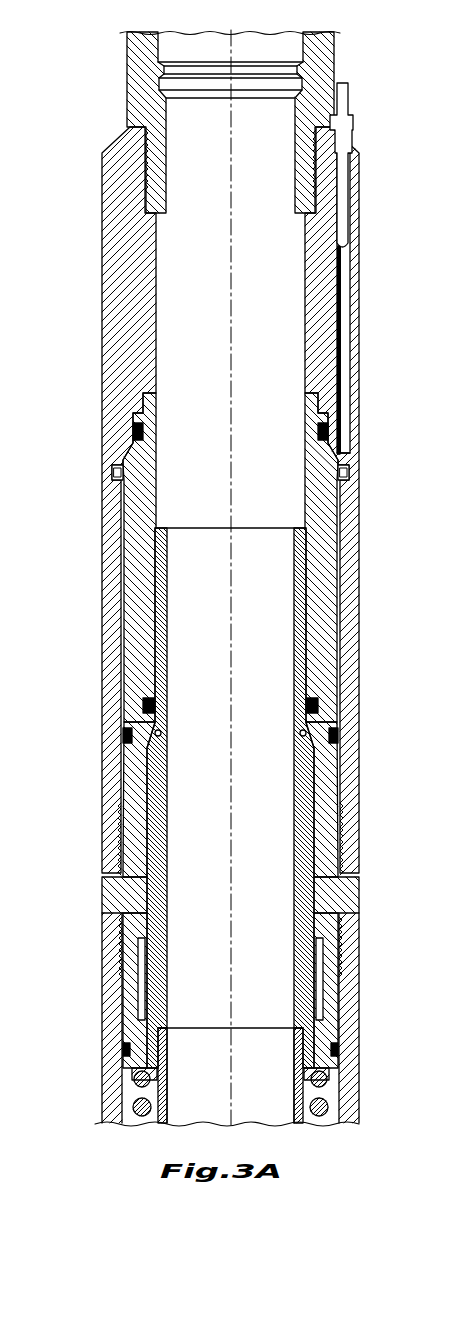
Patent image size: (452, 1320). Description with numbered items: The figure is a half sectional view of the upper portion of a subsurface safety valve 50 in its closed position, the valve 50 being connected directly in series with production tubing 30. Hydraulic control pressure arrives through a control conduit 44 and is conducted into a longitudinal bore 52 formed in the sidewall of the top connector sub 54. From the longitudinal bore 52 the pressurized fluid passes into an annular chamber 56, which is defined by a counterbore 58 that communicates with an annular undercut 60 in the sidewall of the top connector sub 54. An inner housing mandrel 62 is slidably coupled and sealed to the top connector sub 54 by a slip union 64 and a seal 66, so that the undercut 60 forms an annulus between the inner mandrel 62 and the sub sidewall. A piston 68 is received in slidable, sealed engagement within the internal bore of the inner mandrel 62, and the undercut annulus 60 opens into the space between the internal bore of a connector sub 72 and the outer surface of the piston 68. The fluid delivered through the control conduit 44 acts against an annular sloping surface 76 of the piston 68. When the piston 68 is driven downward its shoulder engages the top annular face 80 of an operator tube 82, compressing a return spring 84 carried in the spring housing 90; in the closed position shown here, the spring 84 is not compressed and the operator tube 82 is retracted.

The production tubing 30 is at (132, 63).
The control conduit 44 is at (350, 102).
The subsurface safety valve 50 is at (230, 501).
The longitudinal bore 52 is at (347, 300).
The top connector sub 54 is at (102, 232).
The annular chamber 56 is at (349, 475).
The counterbore 58 is at (112, 477).
The annular undercut 60 is at (185, 557).
The inner housing mandrel 62 is at (135, 618).
The slip union 64 is at (185, 554).
The seal 66 is at (136, 430).
The piston 68 is at (170, 971).
The connector sub 72 is at (108, 892).
The annular sloping surface 76 is at (161, 733).
The top annular face 80 is at (197, 1028).
The operator tube 82 is at (168, 1108).
The return spring 84 is at (133, 1110).
The spring housing 90 is at (108, 1073).